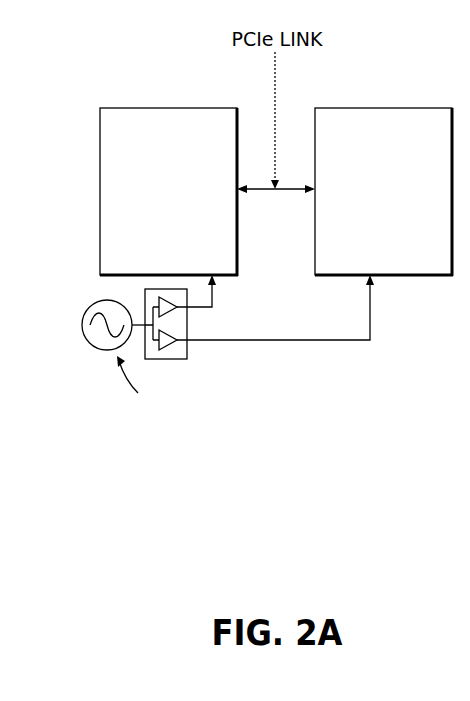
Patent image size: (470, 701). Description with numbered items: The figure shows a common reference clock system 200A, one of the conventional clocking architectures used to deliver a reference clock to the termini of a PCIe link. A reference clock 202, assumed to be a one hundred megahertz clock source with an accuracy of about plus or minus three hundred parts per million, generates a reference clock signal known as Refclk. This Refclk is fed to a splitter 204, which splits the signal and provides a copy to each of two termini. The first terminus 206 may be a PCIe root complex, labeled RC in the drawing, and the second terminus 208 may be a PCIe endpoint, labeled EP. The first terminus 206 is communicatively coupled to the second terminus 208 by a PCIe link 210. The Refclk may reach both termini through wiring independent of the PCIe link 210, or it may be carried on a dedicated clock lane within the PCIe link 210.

The common reference clock system 200A is at (278, 456).
The reference clock 202 is at (84, 322).
The splitter 204 is at (190, 358).
The first terminus 206 is at (176, 108).
The second terminus 208 is at (384, 108).
The PCIe link 210 is at (266, 191).